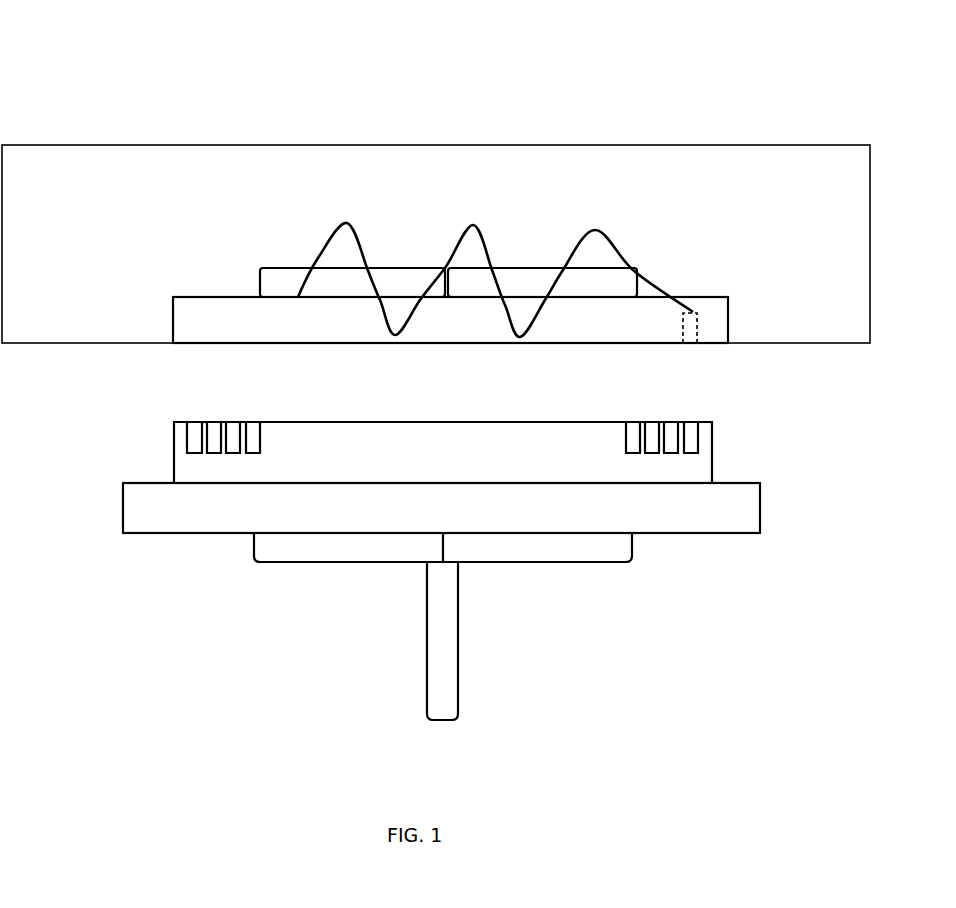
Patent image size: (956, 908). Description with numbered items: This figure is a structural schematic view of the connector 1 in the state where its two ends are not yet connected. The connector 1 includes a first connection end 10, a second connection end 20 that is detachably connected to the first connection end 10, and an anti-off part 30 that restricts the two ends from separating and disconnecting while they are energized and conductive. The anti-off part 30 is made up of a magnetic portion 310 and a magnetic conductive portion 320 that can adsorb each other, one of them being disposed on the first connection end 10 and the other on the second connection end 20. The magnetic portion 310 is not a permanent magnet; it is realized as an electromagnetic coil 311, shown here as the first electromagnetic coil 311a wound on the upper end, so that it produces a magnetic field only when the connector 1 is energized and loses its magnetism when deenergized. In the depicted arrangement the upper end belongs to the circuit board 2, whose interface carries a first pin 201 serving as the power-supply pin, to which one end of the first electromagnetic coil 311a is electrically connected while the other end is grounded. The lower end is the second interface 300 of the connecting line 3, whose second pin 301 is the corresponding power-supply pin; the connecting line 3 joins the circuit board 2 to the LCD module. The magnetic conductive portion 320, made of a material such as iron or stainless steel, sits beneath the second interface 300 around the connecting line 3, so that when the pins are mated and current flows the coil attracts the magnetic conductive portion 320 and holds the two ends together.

The connector 1 is at (568, 383).
The circuit board 2 is at (675, 158).
The connecting line 3 is at (442, 682).
The first connection end 10 is at (277, 326).
The second connection end 20 is at (213, 467).
The anti-off part 30 is at (449, 601).
The first pin 201 is at (697, 330).
The second interface 300 is at (385, 390).
The second pin 301 is at (690, 443).
The magnetic portion 310 is at (376, 199).
The electromagnetic coil 311 is at (495, 280).
The first electromagnetic coil 311a is at (318, 250).
The magnetic conductive portion 320 is at (317, 562).